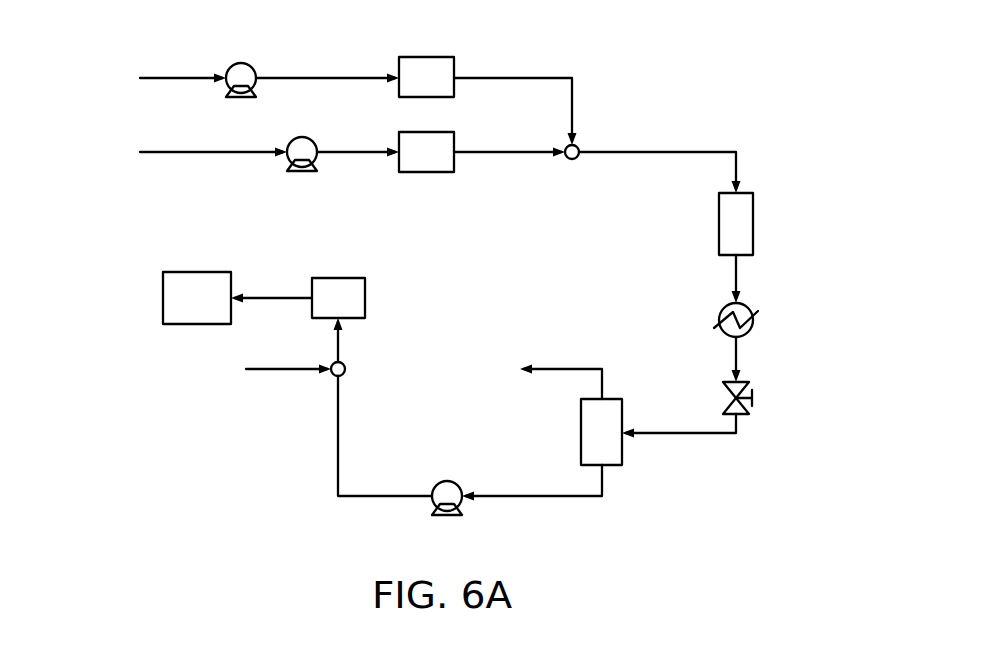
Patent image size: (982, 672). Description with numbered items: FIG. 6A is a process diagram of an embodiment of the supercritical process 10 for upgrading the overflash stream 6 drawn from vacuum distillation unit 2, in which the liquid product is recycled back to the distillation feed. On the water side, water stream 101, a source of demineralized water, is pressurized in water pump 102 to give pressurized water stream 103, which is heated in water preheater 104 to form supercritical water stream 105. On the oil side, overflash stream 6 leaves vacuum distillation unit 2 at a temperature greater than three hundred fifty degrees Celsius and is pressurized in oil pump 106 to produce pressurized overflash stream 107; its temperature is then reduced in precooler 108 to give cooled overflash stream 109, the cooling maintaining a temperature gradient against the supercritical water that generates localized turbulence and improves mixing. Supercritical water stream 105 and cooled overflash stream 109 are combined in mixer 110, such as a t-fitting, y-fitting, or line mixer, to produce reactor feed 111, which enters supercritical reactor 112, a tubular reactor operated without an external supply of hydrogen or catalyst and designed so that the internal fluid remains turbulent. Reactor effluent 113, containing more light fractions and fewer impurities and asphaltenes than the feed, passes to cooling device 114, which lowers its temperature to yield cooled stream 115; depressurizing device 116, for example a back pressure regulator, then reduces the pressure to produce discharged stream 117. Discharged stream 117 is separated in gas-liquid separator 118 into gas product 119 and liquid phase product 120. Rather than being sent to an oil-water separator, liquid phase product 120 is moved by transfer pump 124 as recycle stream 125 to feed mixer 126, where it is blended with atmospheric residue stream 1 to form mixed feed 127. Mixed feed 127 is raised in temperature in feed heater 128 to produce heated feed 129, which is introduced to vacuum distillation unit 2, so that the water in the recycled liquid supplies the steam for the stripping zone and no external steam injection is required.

The supercritical process 10 is at (782, 86).
The atmospheric residue stream 1 is at (290, 368).
The vacuum distillation unit 2 is at (163, 296).
The overflash stream 6 is at (197, 151).
The water stream 101 is at (182, 77).
The water pump 102 is at (241, 62).
The pressurized water stream 103 is at (333, 77).
The water preheater 104 is at (425, 57).
The supercritical water stream 105 is at (573, 98).
The oil pump 106 is at (302, 136).
The pressurized overflash stream 107 is at (359, 155).
The precooler 108 is at (430, 172).
The cooled overflash stream 109 is at (515, 154).
The mixer 110 is at (575, 160).
The reactor feed 111 is at (738, 163).
The supercritical reactor 112 is at (753, 223).
The reactor effluent 113 is at (738, 275).
The cooling device 114 is at (754, 322).
The cooled stream 115 is at (738, 354).
The depressurizing device 116 is at (755, 402).
The discharged stream 117 is at (673, 434).
The gas-liquid separator 118 is at (581, 413).
The gas product 119 is at (565, 368).
The liquid phase product 120 is at (573, 498).
The transfer pump 124 is at (447, 480).
The recycle stream 125 is at (380, 498).
The feed mixer 126 is at (346, 369).
The mixed feed 127 is at (340, 345).
The feed heater 128 is at (365, 298).
The heated feed 129 is at (283, 297).